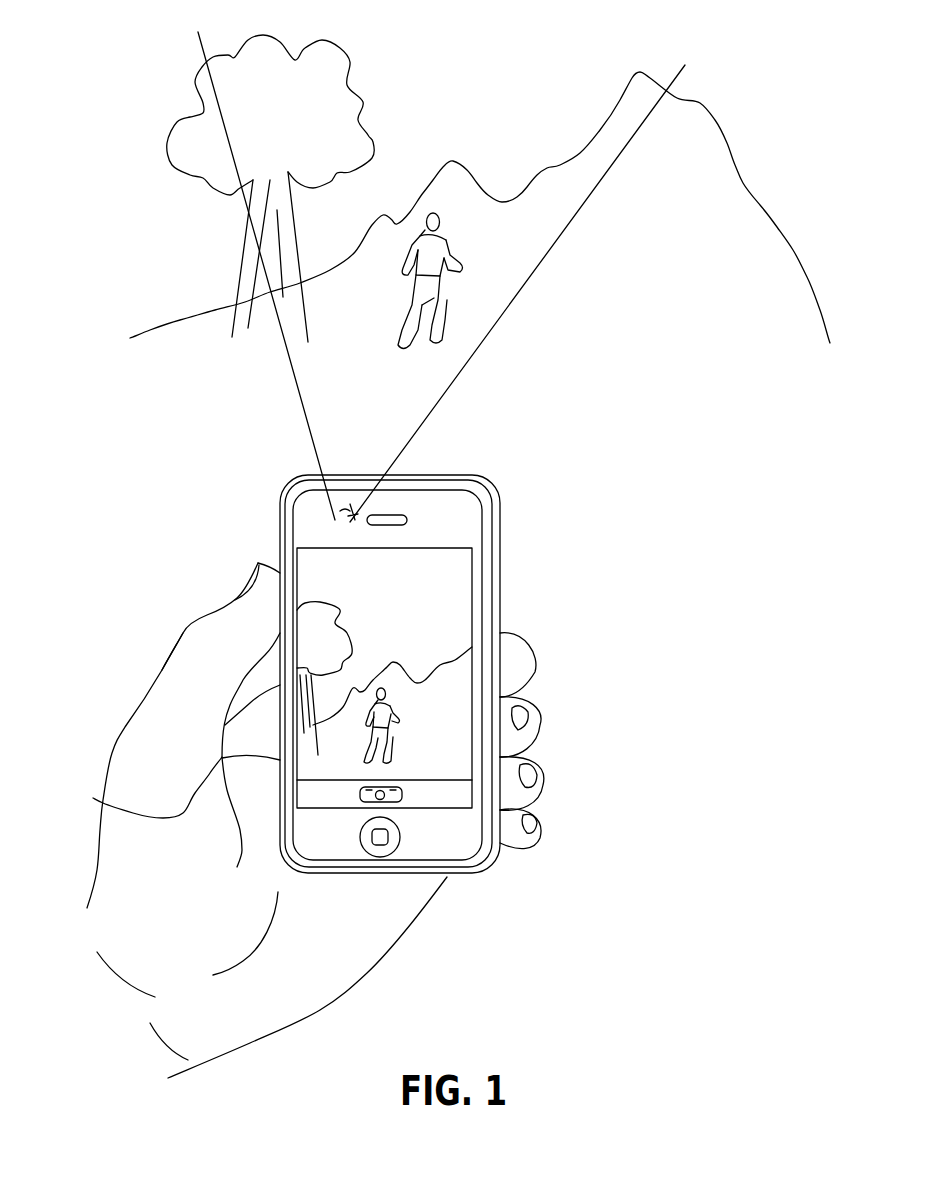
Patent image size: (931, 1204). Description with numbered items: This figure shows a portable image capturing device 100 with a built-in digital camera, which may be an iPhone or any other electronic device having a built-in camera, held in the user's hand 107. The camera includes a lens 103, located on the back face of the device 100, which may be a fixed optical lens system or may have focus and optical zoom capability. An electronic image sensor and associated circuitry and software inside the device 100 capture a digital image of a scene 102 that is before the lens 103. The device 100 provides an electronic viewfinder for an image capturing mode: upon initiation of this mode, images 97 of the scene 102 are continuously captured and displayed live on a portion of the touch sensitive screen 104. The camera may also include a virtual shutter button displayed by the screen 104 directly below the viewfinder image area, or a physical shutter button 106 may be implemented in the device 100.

The portable image capturing device 100 is at (298, 476).
The scene 102 is at (480, 215).
The lens 103 is at (337, 526).
The touch sensitive screen 104 is at (103, 805).
The capture button 106 is at (357, 792).
The user's hand 107 is at (170, 683).
The images 97 is at (370, 615).